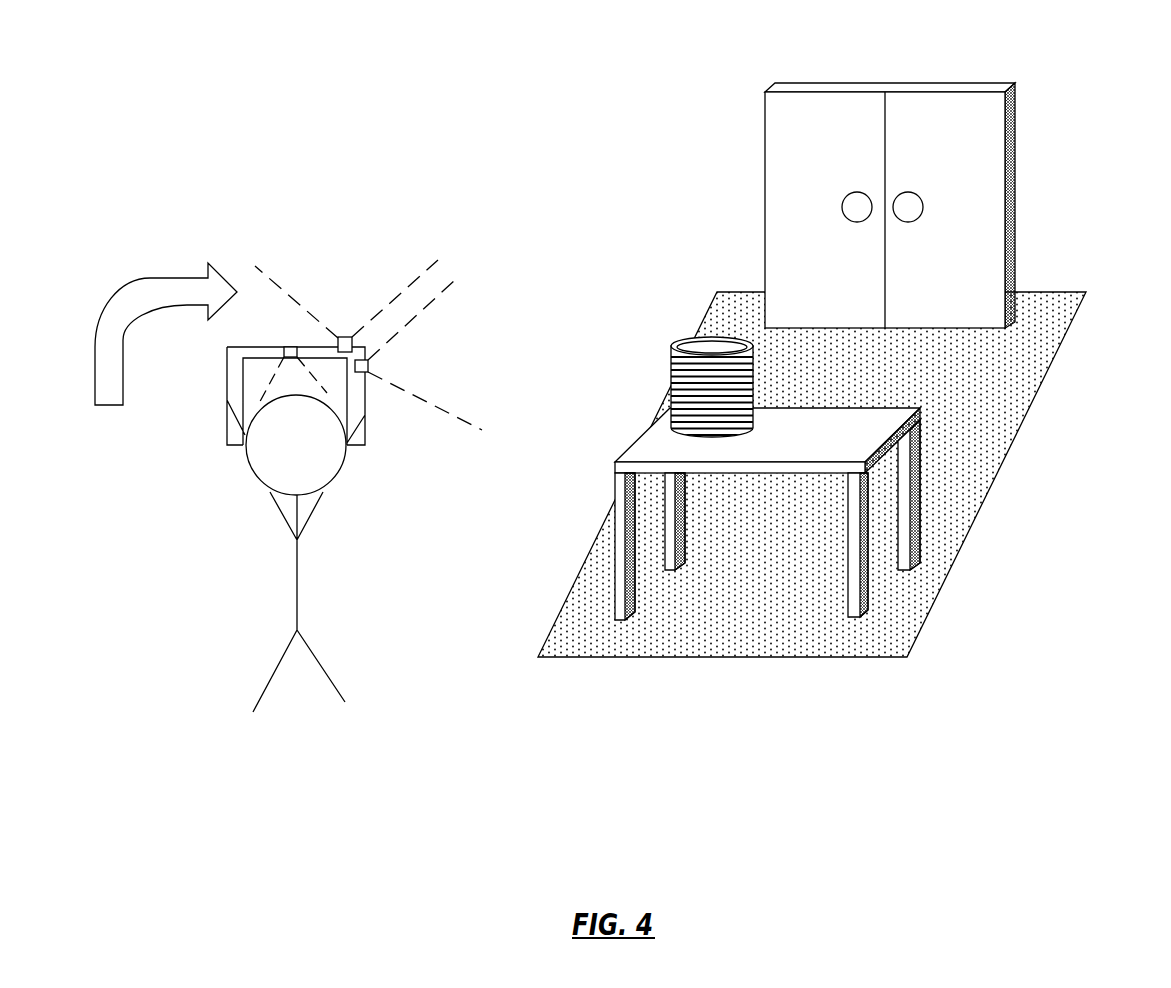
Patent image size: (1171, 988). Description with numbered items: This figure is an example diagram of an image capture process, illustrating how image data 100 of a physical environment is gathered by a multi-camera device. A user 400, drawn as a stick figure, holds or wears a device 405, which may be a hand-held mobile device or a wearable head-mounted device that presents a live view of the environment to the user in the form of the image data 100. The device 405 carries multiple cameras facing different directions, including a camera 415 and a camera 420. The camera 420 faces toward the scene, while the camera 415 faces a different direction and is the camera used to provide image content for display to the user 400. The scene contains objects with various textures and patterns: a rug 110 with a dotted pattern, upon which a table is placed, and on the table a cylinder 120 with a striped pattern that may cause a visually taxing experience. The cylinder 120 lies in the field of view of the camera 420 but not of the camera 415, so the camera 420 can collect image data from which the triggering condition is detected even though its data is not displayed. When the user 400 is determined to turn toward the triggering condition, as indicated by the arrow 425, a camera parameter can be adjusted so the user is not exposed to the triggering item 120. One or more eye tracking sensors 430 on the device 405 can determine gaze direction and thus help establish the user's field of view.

The image data 100 is at (805, 68).
The rug 110 is at (922, 623).
The cylinder 120 is at (673, 343).
The user 400 is at (258, 502).
The device 405 is at (227, 422).
The camera 415 is at (338, 342).
The camera 420 is at (367, 371).
The arrow 425 is at (137, 282).
The eye tracking sensors 430 is at (285, 350).